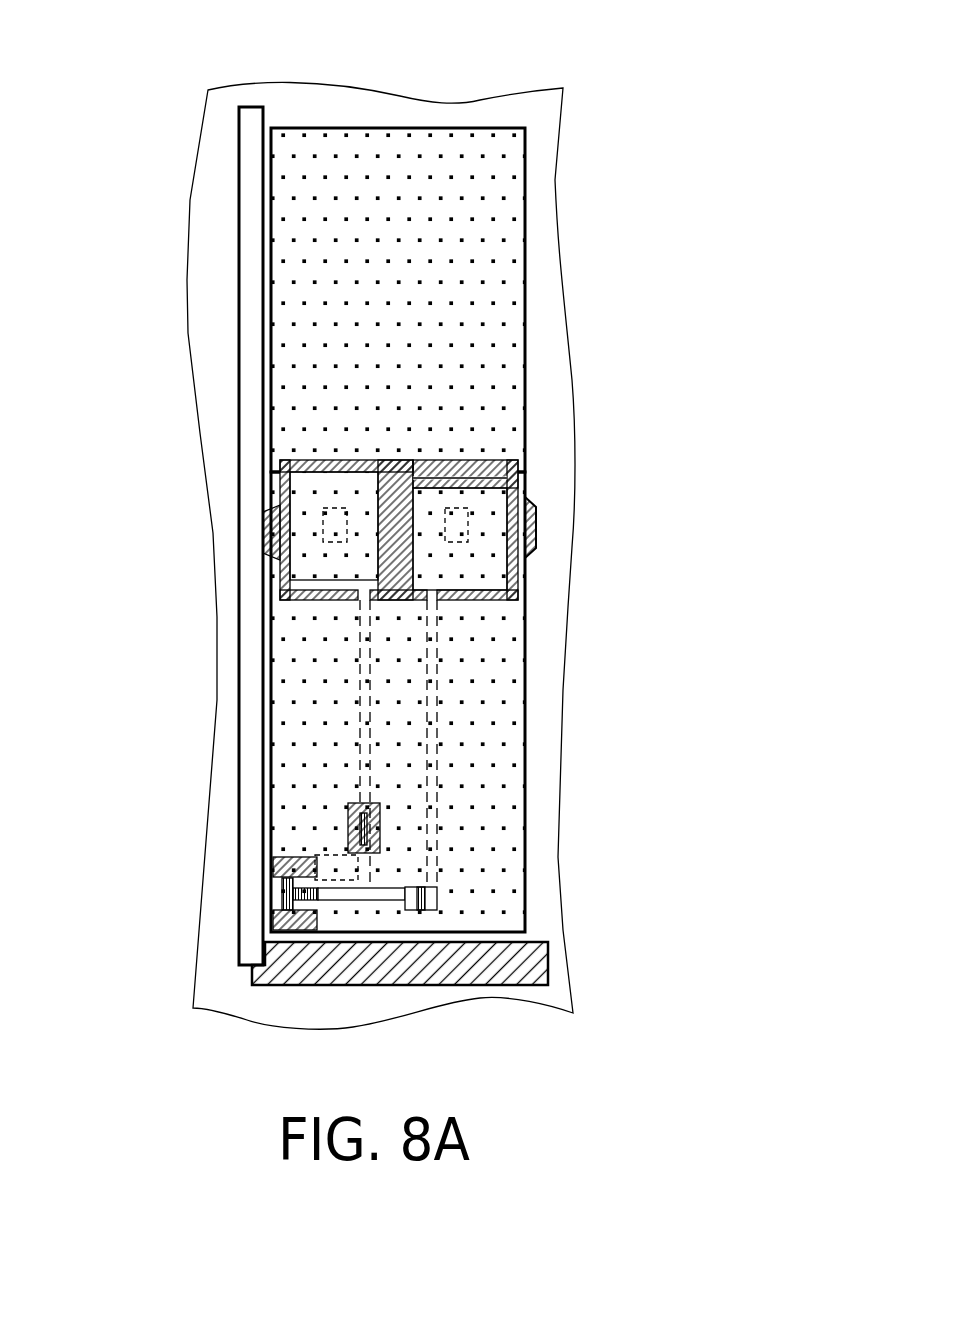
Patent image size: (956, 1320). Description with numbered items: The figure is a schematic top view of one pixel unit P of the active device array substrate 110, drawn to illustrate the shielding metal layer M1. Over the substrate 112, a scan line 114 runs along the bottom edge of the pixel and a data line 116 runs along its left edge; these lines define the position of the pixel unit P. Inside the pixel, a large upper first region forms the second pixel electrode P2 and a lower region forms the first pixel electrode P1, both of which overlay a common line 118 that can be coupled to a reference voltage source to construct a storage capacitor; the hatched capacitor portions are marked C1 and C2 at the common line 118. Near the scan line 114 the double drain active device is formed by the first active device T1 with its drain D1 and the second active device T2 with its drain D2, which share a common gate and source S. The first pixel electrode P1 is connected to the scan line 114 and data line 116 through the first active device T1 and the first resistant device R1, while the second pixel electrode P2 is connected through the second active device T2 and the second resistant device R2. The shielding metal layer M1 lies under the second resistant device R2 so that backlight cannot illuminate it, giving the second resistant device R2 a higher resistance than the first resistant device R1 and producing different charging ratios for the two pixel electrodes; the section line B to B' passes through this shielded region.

The pixel unit P is at (450, 96).
The active device array substrate 110 is at (648, 1060).
The substrate 112 is at (557, 218).
The scan line 114 is at (283, 943).
The data line 116 is at (257, 897).
The common line 118 is at (536, 522).
The first pixel electrode P1 is at (525, 783).
The second pixel electrode P2 is at (303, 240).
The first capacitor C1 is at (474, 525).
The second capacitor C2 is at (318, 520).
The first resistant device R1 is at (437, 895).
The second resistant device R2 is at (352, 833).
The shielding metal layer M1 is at (360, 792).
The first active device T1 is at (289, 935).
The second active device T2 is at (287, 852).
The drain of the first active device D1 is at (332, 927).
The drain of the second active device D2 is at (336, 863).
The source S is at (487, 743).
The section line B is at (384, 798).
The section line B' is at (386, 870).